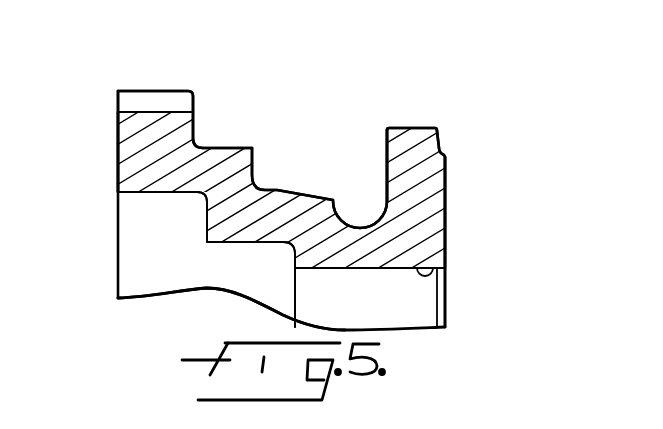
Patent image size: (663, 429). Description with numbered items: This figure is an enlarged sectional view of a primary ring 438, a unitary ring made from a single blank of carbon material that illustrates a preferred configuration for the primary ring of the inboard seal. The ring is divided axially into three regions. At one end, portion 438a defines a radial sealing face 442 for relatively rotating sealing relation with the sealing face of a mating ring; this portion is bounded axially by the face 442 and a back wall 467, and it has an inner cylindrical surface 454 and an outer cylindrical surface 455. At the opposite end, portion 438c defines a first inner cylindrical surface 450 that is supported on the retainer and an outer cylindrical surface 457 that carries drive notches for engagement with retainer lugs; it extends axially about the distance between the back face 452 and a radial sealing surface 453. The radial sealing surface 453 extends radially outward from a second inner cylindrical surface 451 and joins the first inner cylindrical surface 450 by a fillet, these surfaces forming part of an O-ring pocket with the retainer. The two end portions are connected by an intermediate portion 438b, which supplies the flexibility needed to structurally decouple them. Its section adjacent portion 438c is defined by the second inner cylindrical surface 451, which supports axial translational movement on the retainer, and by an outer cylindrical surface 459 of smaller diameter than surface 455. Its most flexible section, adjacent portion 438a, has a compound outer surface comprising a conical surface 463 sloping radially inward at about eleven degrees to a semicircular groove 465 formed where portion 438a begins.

The primary ring 438 is at (408, 111).
The outer cylindrical surface 457 is at (147, 91).
The back face 452 is at (117, 118).
The portion 438c is at (133, 146).
The outer cylindrical surface 459 is at (218, 148).
The conical surface 463 is at (277, 190).
The back wall 467 is at (387, 153).
The semicircular groove 465 is at (355, 228).
The outer cylindrical surface 455 is at (413, 128).
The portion 438a is at (432, 172).
The radial sealing face 442 is at (445, 200).
The inner cylindrical surface 454 is at (445, 278).
The first inner cylindrical surface 450 is at (135, 197).
The radial sealing surface 453 is at (200, 225).
The second inner cylindrical surface 451 is at (207, 260).
The intermediate portion 438b is at (330, 250).